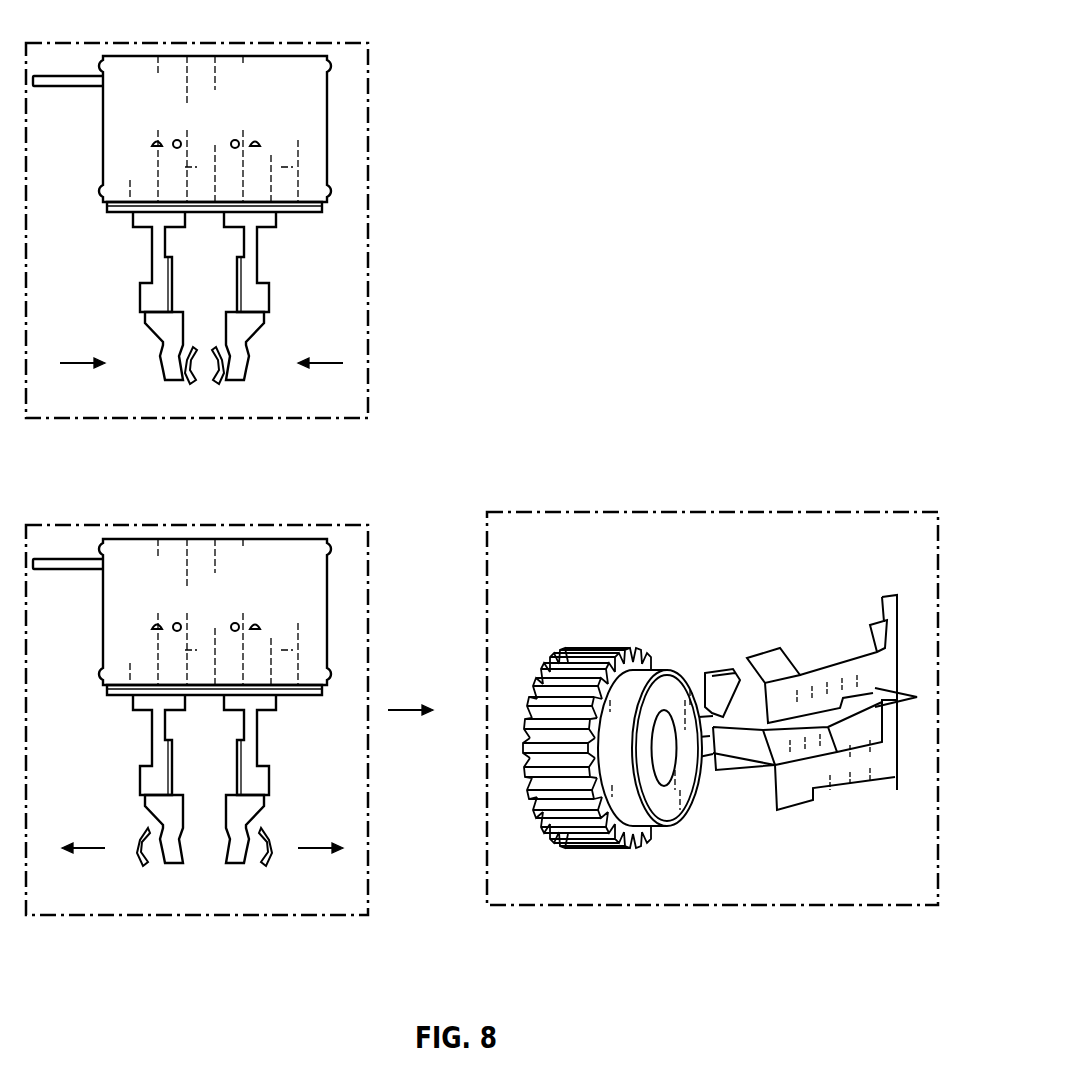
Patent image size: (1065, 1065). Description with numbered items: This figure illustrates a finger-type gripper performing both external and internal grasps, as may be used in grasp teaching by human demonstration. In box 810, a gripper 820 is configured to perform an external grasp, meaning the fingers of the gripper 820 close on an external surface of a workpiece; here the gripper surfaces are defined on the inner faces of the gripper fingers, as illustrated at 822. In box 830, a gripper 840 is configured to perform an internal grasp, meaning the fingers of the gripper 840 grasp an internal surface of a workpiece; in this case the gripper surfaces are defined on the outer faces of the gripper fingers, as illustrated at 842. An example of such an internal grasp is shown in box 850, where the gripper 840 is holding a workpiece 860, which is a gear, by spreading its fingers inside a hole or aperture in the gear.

The box 810 is at (368, 226).
The gripper 820 is at (302, 217).
The gripper surfaces 822 is at (212, 379).
The box 830 is at (368, 549).
The gripper 840 is at (296, 695).
The gripper surfaces 842 is at (260, 865).
The box 850 is at (703, 512).
The workpiece 860 is at (673, 663).